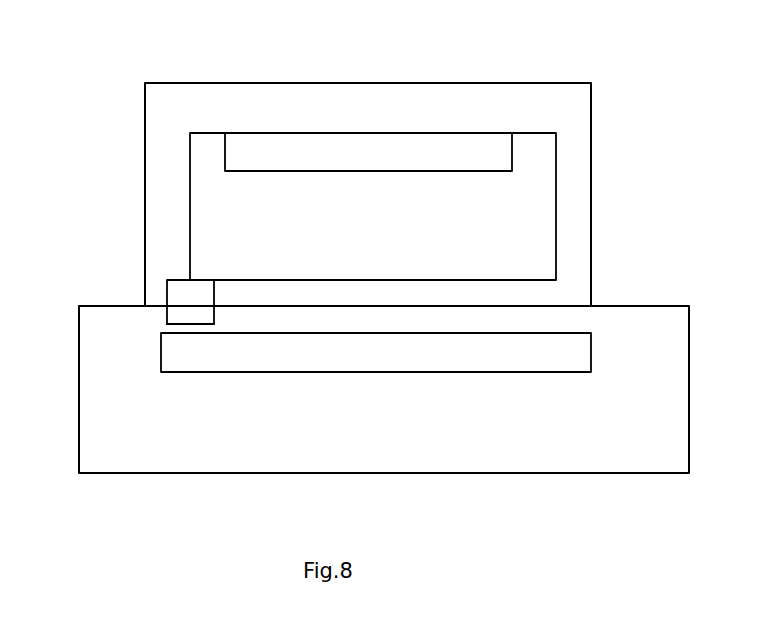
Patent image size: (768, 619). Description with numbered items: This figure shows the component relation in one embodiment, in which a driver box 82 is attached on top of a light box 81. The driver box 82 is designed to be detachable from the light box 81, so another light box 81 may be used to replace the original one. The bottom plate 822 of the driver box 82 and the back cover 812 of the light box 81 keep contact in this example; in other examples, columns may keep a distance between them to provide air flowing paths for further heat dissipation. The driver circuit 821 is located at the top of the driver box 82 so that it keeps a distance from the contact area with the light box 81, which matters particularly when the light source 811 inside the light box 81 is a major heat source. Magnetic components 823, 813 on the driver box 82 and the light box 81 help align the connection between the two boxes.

The light box 81 is at (671, 411).
The light source 811 is at (557, 357).
The back cover 812 is at (97, 330).
The magnetic component 813 is at (173, 324).
The driver box 82 is at (580, 170).
The driver circuit 821 is at (352, 145).
The bottom plate 822 is at (162, 297).
The magnetic component 823 is at (197, 289).